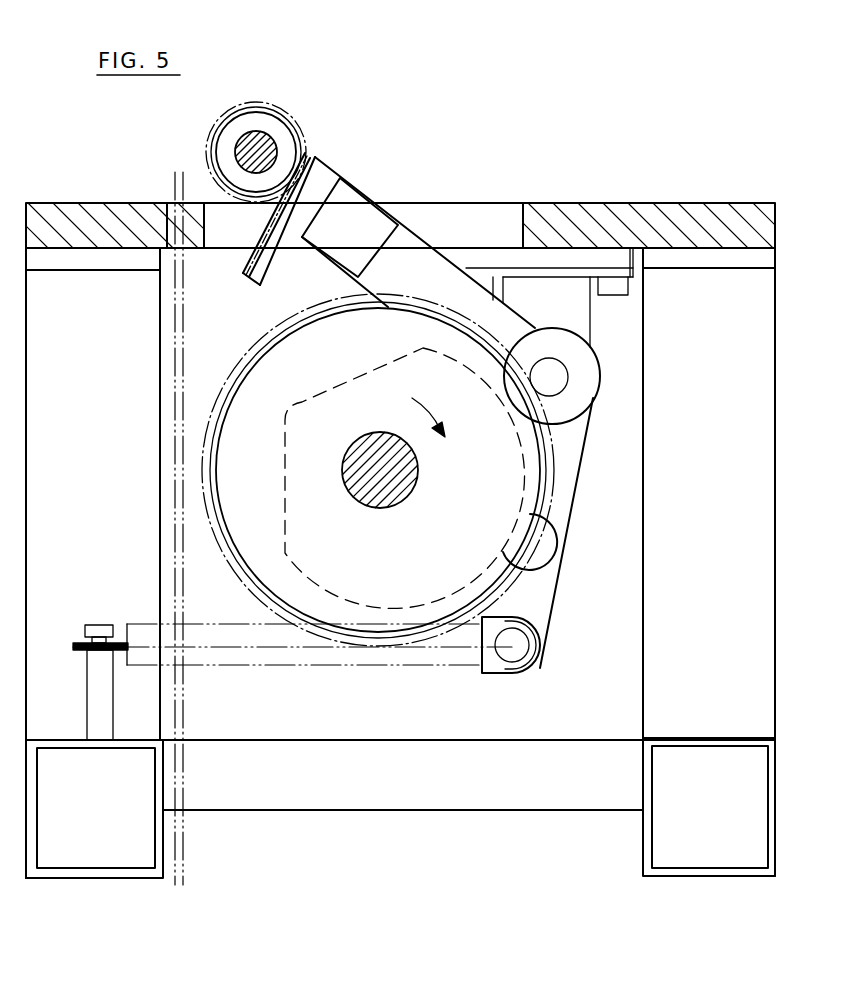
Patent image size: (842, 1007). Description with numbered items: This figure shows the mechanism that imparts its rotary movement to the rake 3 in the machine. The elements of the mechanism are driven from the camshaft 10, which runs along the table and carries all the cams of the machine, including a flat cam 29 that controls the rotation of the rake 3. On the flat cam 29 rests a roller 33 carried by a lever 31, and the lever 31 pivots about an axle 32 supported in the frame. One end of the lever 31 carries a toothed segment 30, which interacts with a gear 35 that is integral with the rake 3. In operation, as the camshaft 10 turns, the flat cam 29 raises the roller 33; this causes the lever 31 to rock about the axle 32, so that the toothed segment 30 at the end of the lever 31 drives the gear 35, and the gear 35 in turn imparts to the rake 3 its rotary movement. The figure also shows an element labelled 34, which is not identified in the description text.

The rake 3 is at (268, 152).
The camshaft 10 is at (350, 480).
The flat cam 29 is at (302, 403).
The toothed segment 30 is at (322, 182).
The lever 31 is at (412, 250).
The axle 32 is at (555, 378).
The roller 33 is at (547, 545).
The adjusting rod 34 is at (254, 668).
The gear 35 is at (293, 118).